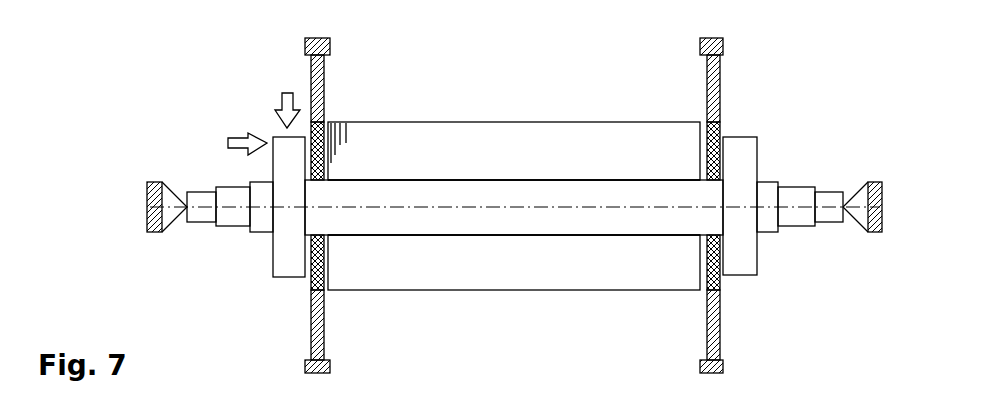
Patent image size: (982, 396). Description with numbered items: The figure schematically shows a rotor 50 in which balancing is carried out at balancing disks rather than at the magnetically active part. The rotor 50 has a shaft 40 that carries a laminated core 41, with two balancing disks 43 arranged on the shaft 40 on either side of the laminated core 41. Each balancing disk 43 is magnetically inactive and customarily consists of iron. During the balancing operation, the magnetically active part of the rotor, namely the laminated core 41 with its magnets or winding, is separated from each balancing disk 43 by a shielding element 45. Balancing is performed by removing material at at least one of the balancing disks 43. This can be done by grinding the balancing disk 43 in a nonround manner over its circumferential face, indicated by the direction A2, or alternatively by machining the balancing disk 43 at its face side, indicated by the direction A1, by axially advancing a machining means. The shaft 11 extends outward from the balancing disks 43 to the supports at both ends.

The rotor 50 is at (205, 62).
The shaft 11 is at (825, 205).
The balancing disk 43 is at (292, 258).
The shielding element 45 is at (323, 85).
The laminated core 41 is at (512, 270).
The shaft 40 is at (628, 232).
The face side machining A1 is at (230, 143).
The circumferential face grinding A2 is at (287, 94).